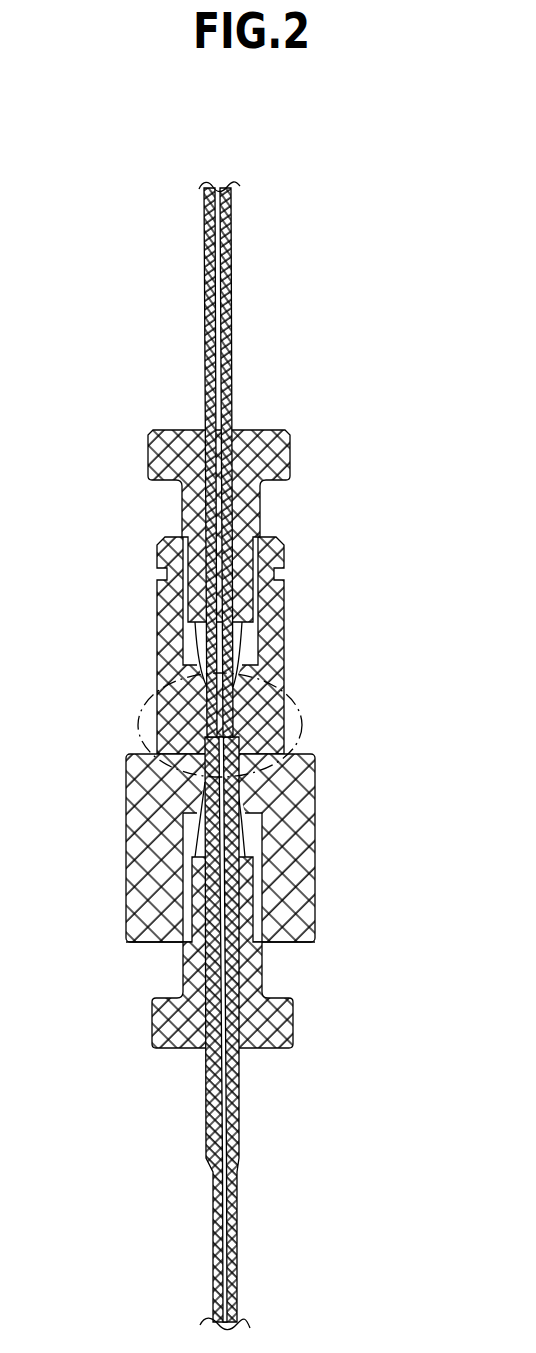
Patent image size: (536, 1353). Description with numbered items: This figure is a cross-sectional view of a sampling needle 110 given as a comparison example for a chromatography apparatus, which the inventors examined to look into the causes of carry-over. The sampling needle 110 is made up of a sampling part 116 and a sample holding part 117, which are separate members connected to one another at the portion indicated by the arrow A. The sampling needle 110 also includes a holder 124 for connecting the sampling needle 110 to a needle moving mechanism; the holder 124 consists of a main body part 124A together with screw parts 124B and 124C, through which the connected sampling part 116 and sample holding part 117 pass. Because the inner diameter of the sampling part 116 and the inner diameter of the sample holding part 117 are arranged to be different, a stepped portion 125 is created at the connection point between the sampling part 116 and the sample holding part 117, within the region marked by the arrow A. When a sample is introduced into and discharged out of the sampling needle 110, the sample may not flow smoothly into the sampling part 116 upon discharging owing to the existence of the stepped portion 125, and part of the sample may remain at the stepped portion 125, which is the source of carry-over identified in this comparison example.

The sampling needle 110 is at (280, 237).
The sampling part 116 is at (236, 1230).
The sample holding part 117 is at (232, 308).
The holder 124 is at (318, 578).
The main body part 124A is at (303, 800).
The screw part 124B is at (290, 448).
The screw part 124C is at (278, 1020).
The stepped portion 125 is at (213, 730).
The arrow A is at (306, 701).